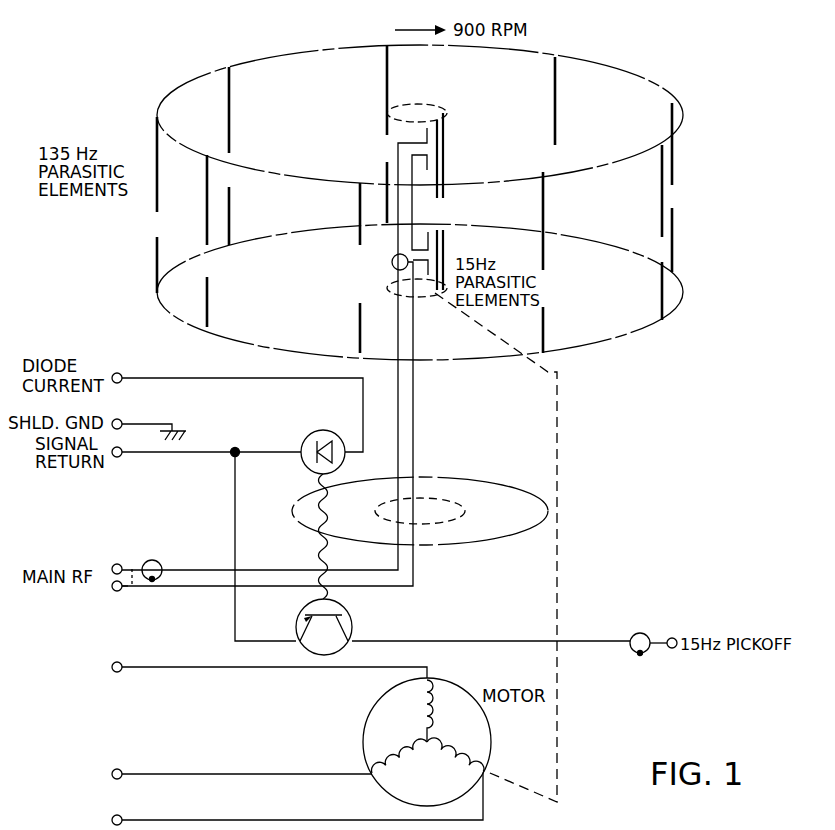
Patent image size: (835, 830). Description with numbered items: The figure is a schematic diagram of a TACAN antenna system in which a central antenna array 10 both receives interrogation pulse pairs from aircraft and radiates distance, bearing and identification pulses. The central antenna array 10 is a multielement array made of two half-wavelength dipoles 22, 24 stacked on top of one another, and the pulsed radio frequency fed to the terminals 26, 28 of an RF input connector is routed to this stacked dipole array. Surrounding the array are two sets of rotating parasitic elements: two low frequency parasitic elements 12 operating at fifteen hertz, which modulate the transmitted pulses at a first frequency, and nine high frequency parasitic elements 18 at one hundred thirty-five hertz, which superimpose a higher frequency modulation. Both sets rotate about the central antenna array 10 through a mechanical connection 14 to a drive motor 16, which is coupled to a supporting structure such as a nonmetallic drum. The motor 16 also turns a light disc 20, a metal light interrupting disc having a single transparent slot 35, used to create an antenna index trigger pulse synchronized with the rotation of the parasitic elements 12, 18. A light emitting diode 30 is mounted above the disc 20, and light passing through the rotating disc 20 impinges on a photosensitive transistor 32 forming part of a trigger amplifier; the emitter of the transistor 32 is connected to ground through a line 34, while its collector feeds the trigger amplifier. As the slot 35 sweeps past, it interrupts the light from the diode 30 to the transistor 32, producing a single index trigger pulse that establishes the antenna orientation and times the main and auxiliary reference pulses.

The central antenna array 10 is at (386, 262).
The parasitic elements 12 is at (448, 168).
The mechanical connection 14 is at (557, 453).
The motor 16 is at (362, 722).
The parasitic elements 18 is at (157, 126).
The light disc 20 is at (460, 482).
The half-wavelength dipole 22 is at (424, 147).
The half-wavelength dipole 24 is at (425, 260).
The terminal 26 is at (117, 563).
The terminal 28 is at (116, 591).
The light emitting diode 30 is at (309, 429).
The photosensitive transistor 32 is at (350, 620).
The line 34 is at (191, 455).
The slot 35 is at (468, 520).